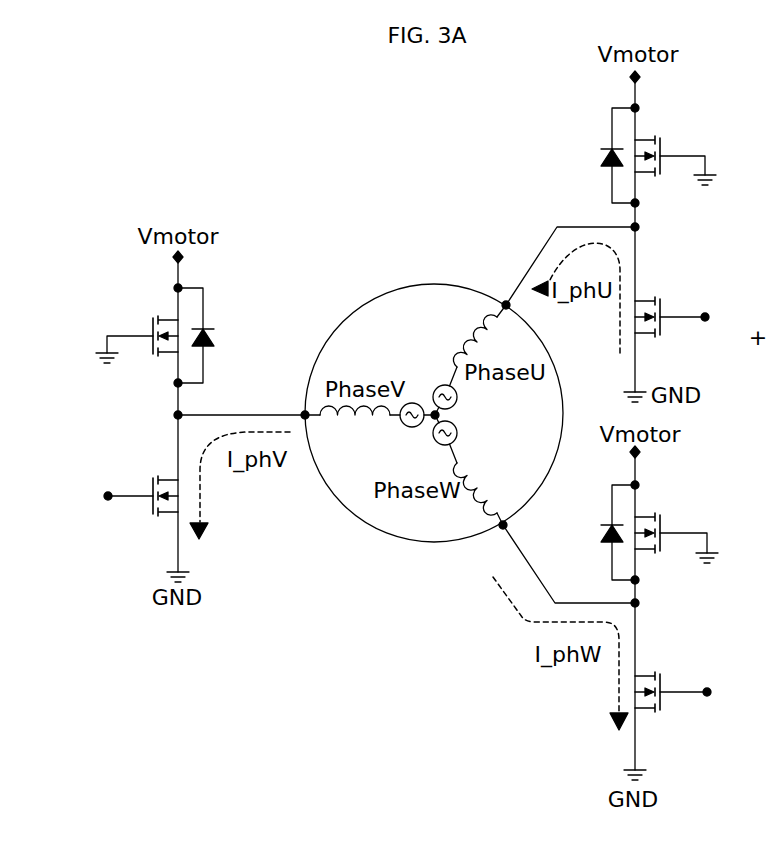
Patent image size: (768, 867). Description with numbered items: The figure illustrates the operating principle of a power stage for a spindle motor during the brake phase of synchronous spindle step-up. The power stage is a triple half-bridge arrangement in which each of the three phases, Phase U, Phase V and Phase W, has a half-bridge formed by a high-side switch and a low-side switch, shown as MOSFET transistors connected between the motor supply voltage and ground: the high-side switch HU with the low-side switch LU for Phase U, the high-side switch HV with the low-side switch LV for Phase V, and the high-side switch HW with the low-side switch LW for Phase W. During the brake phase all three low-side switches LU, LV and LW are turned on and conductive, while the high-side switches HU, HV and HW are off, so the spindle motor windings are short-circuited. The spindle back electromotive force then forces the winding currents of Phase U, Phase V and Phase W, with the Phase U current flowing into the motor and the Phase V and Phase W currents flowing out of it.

The high-side switch HV is at (193, 312).
The low-side switch LV is at (168, 515).
The high-side switch HU is at (633, 147).
The low-side switch LU is at (642, 323).
The high-side switch HW is at (635, 527).
The low-side switch LW is at (643, 705).